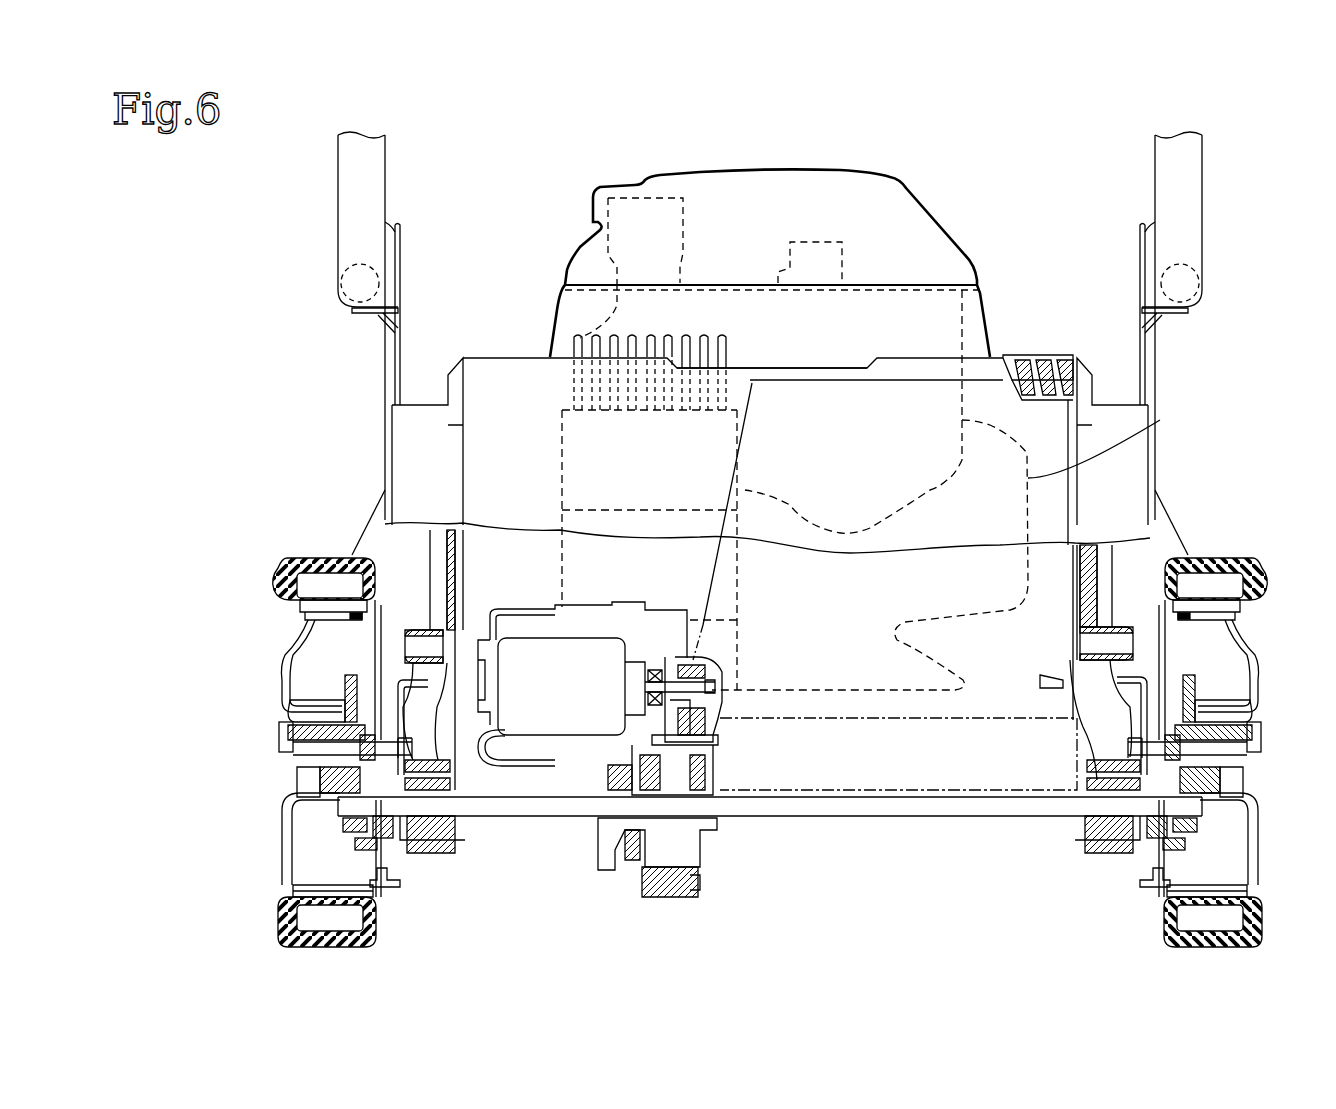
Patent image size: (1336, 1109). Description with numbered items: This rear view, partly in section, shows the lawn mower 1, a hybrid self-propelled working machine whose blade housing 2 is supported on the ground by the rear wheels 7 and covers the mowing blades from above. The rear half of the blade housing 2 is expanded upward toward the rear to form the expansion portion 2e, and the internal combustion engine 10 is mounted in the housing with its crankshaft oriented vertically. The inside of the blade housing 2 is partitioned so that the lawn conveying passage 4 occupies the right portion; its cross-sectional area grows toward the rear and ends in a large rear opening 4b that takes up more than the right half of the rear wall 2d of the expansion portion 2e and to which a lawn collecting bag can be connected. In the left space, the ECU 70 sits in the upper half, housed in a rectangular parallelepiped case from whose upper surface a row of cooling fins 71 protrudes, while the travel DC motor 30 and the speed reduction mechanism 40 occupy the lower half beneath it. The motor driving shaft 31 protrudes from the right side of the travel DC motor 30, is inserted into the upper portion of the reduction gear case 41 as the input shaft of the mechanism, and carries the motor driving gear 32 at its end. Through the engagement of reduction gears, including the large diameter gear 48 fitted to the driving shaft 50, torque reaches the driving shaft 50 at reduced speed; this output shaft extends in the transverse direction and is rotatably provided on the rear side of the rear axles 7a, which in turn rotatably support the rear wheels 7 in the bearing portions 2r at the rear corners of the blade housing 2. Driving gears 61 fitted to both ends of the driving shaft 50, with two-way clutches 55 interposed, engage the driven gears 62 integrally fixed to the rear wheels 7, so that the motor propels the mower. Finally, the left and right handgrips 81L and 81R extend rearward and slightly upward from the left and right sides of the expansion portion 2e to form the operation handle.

The lawn mower 1 is at (770, 148).
The blade housing 2 is at (794, 340).
The rear wall 2d is at (497, 432).
The expansion portion 2e is at (830, 367).
The bearing portion 2r is at (440, 853).
The lawn conveying passage 4 is at (977, 487).
The rear opening 4b is at (897, 468).
The rear wheel 7 is at (312, 558).
The rear axle 7a is at (330, 744).
The internal combustion engine 10 is at (1160, 418).
The travel DC motor 30 is at (540, 640).
The motor driving shaft 31 is at (693, 686).
The motor driving gear 32 is at (693, 660).
The speed reduction mechanism 40 is at (742, 770).
The reduction gear case 41 is at (717, 740).
The large diameter gear 48 is at (630, 867).
The driving shaft 50 is at (830, 817).
The two-way clutch 55 is at (362, 835).
The driving gear 61 is at (347, 837).
The driven gear 62 is at (345, 676).
The ECU 70 is at (560, 447).
The cooling fin 71 is at (613, 334).
The left handgrip 81L is at (386, 190).
The right handgrip 81R is at (1156, 170).